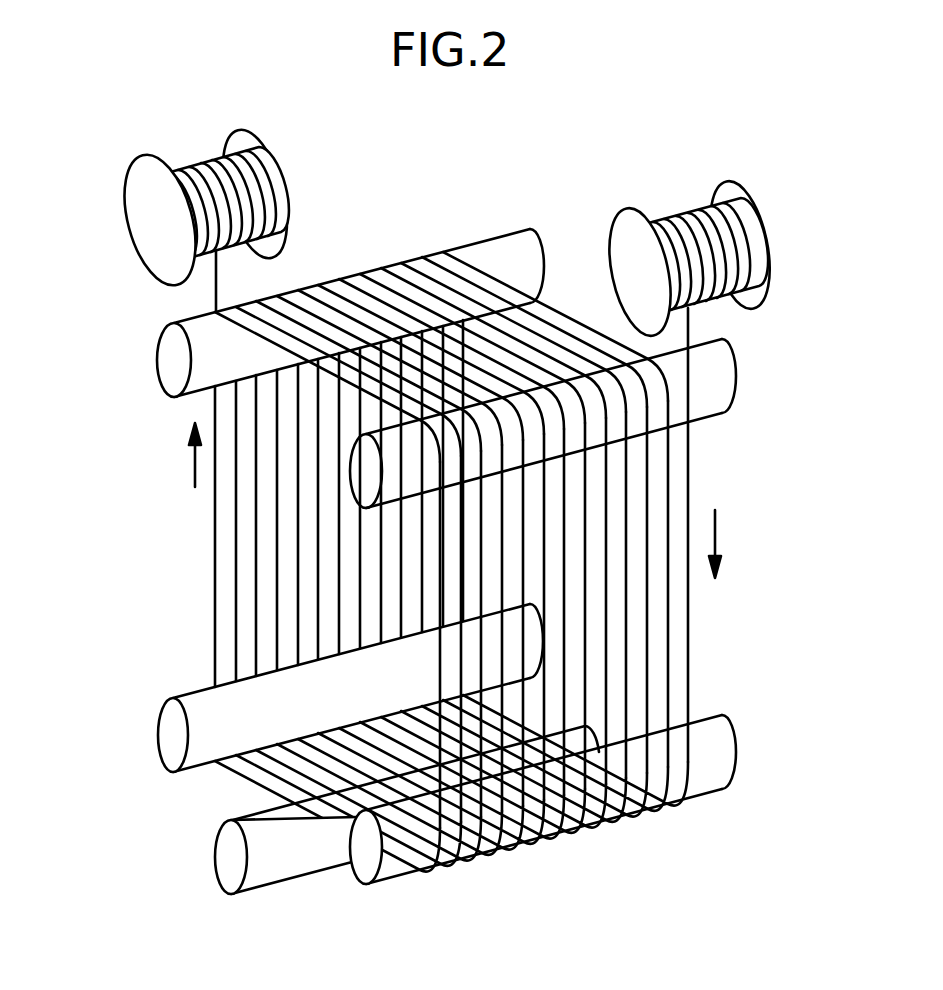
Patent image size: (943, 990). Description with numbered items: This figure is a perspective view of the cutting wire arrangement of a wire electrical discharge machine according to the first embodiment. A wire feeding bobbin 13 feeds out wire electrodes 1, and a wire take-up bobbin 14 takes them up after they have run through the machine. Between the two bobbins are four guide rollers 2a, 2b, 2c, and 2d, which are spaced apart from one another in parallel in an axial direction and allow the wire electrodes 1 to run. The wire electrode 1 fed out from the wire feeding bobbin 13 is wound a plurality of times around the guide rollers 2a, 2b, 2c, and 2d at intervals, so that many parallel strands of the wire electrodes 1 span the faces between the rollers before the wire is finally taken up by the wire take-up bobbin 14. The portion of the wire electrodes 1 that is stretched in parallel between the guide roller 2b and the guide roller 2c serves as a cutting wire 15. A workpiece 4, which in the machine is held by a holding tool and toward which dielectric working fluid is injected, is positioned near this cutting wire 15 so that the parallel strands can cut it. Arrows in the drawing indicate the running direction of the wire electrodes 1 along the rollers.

The wire electrode 1 is at (213, 541).
The guide roller 2a is at (724, 386).
The guide roller 2b is at (368, 868).
The guide roller 2c is at (172, 736).
The guide roller 2d is at (172, 367).
The workpiece 4 is at (231, 873).
The wire feeding bobbin 13 is at (625, 230).
The wire take-up bobbin 14 is at (147, 215).
The cutting wire 15 is at (297, 775).